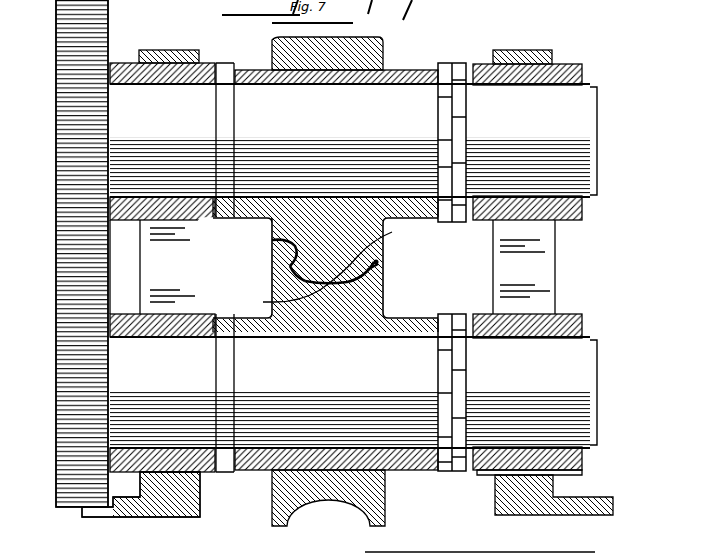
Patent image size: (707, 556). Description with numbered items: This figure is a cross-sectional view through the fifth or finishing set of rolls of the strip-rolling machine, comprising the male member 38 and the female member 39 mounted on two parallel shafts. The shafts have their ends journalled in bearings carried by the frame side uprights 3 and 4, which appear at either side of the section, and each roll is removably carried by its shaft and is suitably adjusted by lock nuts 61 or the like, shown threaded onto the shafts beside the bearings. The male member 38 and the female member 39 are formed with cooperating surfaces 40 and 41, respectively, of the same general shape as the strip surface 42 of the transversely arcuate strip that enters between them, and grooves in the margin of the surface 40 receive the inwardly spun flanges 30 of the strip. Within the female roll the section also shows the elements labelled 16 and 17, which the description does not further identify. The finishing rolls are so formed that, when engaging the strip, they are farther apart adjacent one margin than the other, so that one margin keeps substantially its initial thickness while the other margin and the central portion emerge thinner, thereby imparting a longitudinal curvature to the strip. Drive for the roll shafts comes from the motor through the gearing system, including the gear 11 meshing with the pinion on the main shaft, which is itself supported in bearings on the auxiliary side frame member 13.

The side upright 3 is at (150, 266).
The side upright 4 is at (530, 280).
The gear 11 is at (288, 256).
The auxiliary side frame member 13 is at (263, 302).
The pawl tip 16 is at (288, 270).
The pivot 17 is at (378, 262).
The inwardly spun flanges 30 is at (272, 239).
The male member 38 is at (378, 53).
The female member 39 is at (374, 304).
The cooperating surface 40 is at (378, 266).
The cooperating surface 41 is at (331, 500).
The strip surface 42 is at (392, 232).
The lock nuts 61 is at (461, 313).